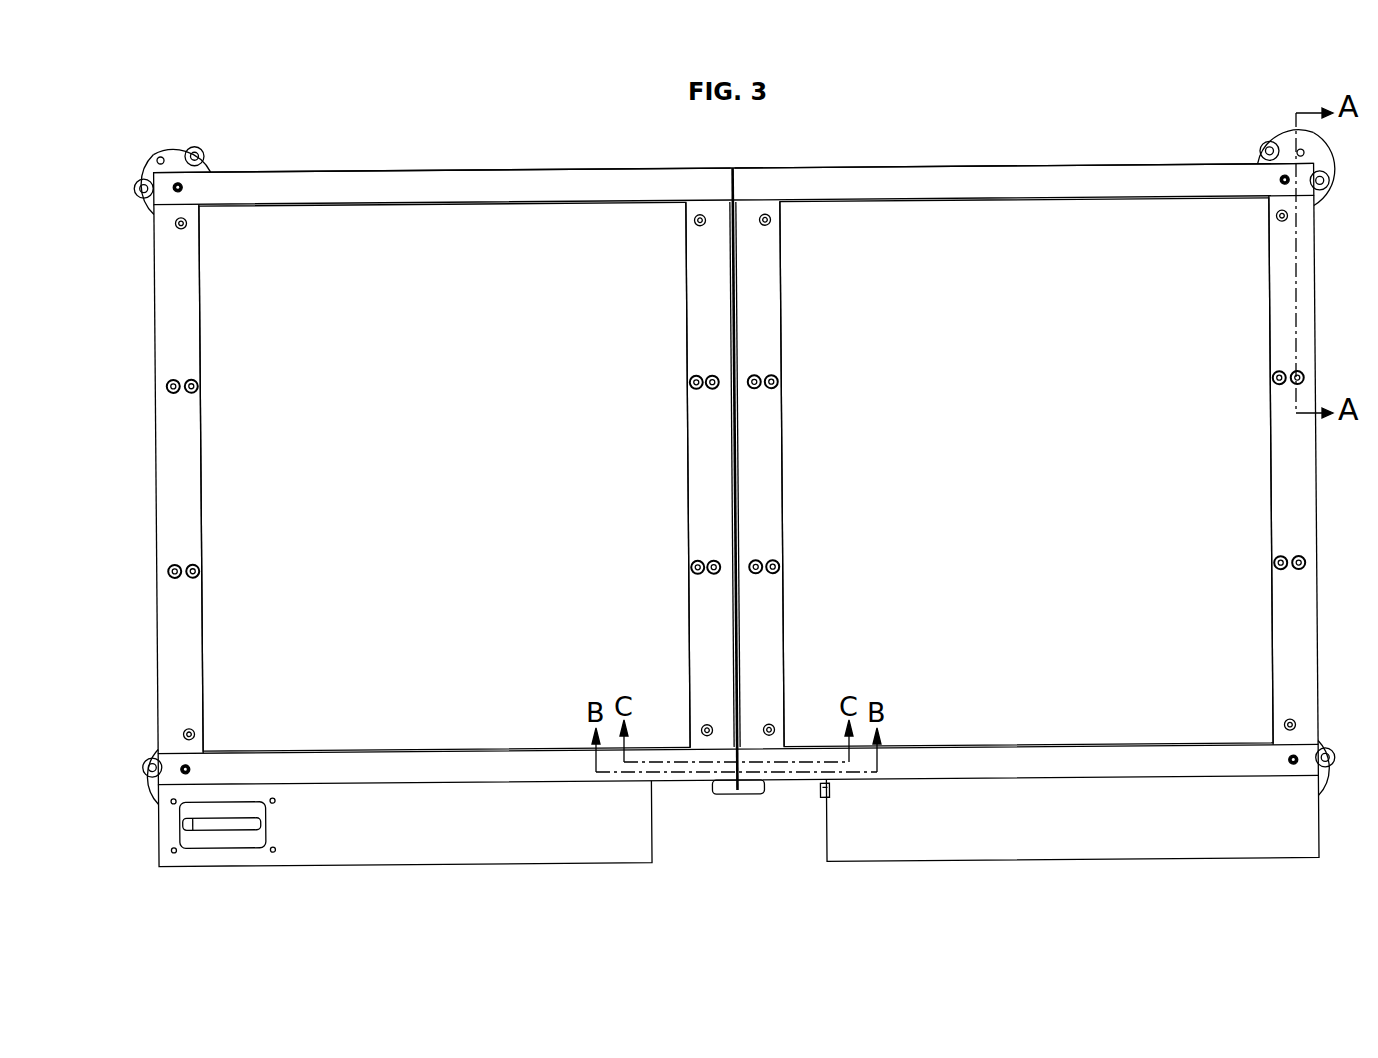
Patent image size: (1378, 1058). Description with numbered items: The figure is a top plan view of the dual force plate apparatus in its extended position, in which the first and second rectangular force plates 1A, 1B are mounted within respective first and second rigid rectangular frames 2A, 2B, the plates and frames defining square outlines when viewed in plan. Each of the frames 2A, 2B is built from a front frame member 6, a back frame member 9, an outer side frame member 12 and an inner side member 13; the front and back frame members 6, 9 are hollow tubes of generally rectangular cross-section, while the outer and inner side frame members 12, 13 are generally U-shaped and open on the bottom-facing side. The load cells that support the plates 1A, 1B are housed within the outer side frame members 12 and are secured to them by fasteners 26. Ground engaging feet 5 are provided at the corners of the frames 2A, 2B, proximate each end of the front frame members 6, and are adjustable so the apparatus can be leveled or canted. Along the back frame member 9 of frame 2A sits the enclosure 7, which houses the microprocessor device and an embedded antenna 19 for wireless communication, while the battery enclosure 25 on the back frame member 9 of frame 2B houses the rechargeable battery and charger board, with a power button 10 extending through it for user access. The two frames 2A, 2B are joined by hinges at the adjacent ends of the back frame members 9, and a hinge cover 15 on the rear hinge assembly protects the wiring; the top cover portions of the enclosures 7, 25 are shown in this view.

The first rectangular force plate 1A is at (415, 300).
The second rectangular force plate 1B is at (975, 278).
The first rigid rectangular frame 2A is at (313, 188).
The second rigid rectangular frame 2B is at (940, 182).
The ground engaging feet 5 is at (174, 152).
The front frame member 6 is at (543, 186).
The enclosure 7 is at (428, 827).
The back frame member 9 is at (352, 772).
The power button 10 is at (822, 795).
The outer side frame member 12 is at (174, 423).
The inner side member 13 is at (712, 285).
The hinge cover 15 is at (735, 791).
The embedded antenna 19 is at (225, 828).
The battery enclosure 25 is at (1085, 823).
The fasteners 26 is at (1298, 562).